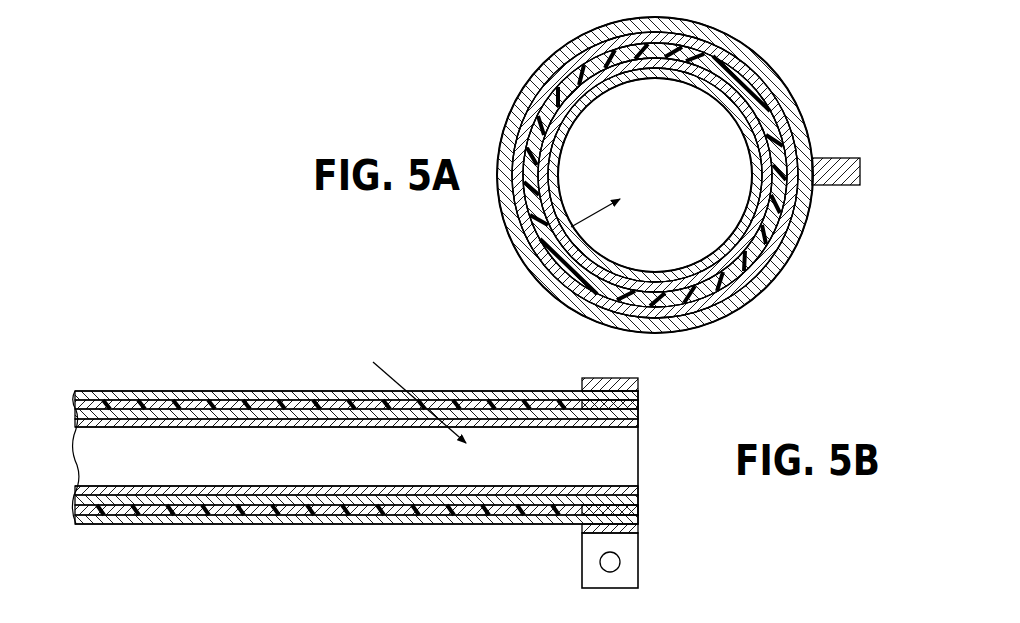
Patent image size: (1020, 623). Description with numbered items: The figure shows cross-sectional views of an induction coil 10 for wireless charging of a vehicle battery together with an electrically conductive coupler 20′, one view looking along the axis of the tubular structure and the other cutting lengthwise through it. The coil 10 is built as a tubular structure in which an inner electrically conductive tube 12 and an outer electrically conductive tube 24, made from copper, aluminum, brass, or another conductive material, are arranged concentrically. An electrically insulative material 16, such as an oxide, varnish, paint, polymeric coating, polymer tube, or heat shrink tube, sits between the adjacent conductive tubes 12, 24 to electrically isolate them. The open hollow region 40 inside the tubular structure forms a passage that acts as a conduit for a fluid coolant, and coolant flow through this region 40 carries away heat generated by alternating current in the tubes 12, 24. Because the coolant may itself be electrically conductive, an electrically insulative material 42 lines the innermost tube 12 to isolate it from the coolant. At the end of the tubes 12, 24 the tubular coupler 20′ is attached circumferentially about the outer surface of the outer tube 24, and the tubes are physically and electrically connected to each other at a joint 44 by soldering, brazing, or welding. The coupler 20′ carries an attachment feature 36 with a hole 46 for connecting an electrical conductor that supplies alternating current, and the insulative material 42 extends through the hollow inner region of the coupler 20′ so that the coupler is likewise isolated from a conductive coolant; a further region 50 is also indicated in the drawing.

In FIG. 5A, the induction coil 10 is at (782, 34).
In FIG. 5B, the induction coil 10 is at (150, 337).
In FIG. 5A, the inner electrically conductive tube 12 is at (767, 183).
In FIG. 5B, the inner electrically conductive tube 12 is at (313, 490).
In FIG. 5A, the electrically insulative material 16 is at (791, 145).
In FIG. 5B, the electrically insulative material 16 is at (232, 407).
In FIG. 5A, the electrically conductive coupler 20′ is at (776, 82).
In FIG. 5B, the electrically conductive coupler 20′ is at (640, 383).
In FIG. 5A, the outer electrically conductive tube 24 is at (786, 108).
In FIG. 5B, the outer electrically conductive tube 24 is at (178, 399).
In FIG. 5A, the attachment feature 36 is at (850, 186).
In FIG. 5B, the attachment feature 36 is at (630, 570).
In FIG. 5A, the hollow region 40 is at (543, 231).
In FIG. 5B, the hollow region 40 is at (408, 389).
In FIG. 5A, the electrically insulative material 42 is at (744, 213).
In FIG. 5B, the electrically insulative material 42 is at (385, 500).
In FIG. 5B, the joint 44 is at (640, 405).
In FIG. 5B, the hole 46 is at (602, 569).
In FIG. 5B, the connector region 50 is at (840, 618).